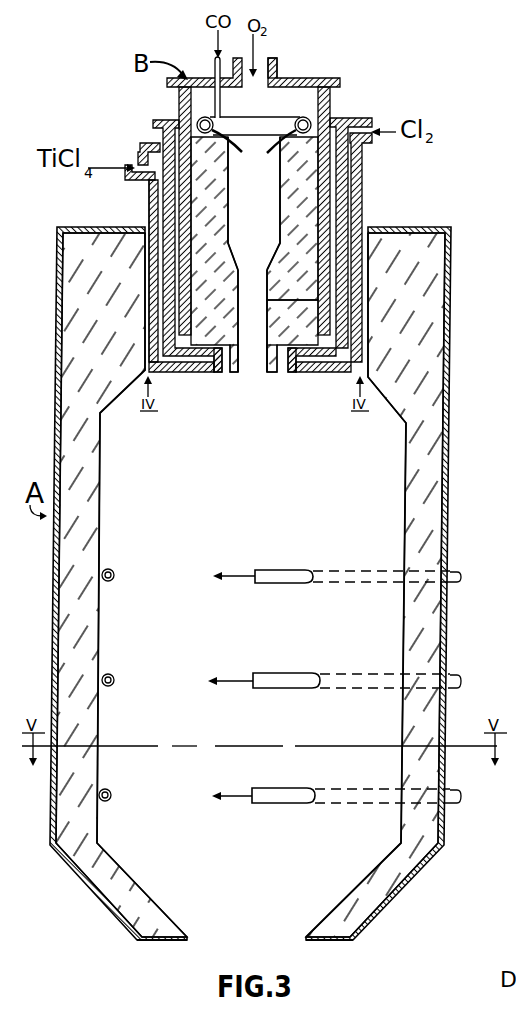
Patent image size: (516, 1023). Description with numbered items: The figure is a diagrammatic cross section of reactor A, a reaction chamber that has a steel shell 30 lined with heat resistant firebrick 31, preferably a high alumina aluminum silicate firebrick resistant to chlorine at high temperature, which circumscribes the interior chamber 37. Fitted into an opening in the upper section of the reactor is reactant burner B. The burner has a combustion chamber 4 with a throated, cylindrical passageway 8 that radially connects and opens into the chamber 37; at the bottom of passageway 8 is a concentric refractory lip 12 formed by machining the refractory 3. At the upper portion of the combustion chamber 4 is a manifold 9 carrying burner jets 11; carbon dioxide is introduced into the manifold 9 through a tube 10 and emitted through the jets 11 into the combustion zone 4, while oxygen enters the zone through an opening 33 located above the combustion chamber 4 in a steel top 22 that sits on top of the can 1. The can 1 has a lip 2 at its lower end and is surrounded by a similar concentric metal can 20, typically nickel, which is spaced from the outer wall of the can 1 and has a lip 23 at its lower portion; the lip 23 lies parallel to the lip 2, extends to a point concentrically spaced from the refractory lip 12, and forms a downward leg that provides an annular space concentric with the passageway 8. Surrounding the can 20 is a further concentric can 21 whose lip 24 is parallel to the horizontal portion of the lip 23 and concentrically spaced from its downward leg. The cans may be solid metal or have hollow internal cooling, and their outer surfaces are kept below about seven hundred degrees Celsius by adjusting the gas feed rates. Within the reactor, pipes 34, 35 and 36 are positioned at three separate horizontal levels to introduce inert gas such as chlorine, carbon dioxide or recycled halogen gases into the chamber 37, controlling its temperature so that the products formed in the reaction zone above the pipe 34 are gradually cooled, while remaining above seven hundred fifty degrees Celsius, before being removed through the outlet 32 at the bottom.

The can 1 is at (178, 103).
The lip 2 is at (313, 335).
The refractory 3 is at (300, 202).
The combustion chamber 4 is at (254, 203).
The throated passageway 8 is at (254, 321).
The manifold 9 is at (285, 118).
The tube 10 is at (212, 63).
The burner jets 11 is at (247, 108).
The refractory lip 12 is at (269, 373).
The can 20 is at (164, 203).
The can 21 is at (364, 160).
The steel top 22 is at (313, 69).
The lip 23 is at (218, 373).
The lip 24 is at (311, 373).
The steel shell 30 is at (446, 385).
The firebrick 31 is at (433, 425).
The outlet 32 is at (245, 937).
The opening 33 is at (266, 60).
The pipe 34 is at (114, 577).
The pipe 35 is at (114, 682).
The pipe 36 is at (111, 797).
The chamber 37 is at (251, 585).